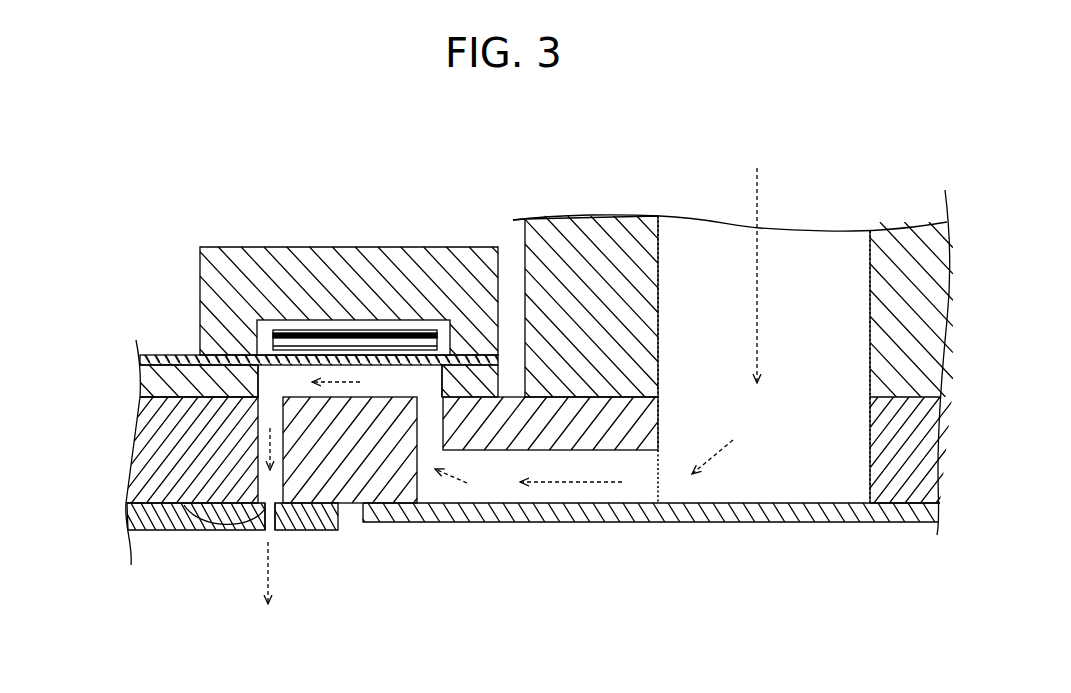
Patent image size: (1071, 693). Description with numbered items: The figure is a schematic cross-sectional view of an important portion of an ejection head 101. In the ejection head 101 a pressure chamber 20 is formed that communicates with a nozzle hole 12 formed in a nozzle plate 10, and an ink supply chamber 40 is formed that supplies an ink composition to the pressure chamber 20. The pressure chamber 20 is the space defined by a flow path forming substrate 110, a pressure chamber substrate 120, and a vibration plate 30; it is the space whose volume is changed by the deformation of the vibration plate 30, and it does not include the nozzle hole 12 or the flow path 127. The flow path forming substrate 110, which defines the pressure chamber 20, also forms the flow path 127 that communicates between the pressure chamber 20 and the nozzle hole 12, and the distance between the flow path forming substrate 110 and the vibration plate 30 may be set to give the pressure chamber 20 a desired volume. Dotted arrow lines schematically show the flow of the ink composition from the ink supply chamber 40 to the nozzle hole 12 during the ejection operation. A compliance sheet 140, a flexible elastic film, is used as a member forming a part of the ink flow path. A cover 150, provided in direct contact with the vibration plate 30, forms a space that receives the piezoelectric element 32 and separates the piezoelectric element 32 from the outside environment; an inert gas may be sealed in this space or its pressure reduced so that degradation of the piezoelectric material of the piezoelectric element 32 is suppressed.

The ejection head 101 is at (879, 150).
The flow path forming substrate 110 is at (583, 240).
The ink supply chamber 40 is at (711, 245).
The piezoelectric element 32 is at (294, 332).
The cover 150 is at (376, 262).
The vibration plate 30 is at (160, 353).
The pressure chamber substrate 120 is at (140, 379).
The pressure chamber 20 is at (133, 413).
The nozzle plate 10 is at (202, 531).
The flow path 127 is at (227, 531).
The nozzle hole 12 is at (270, 547).
The compliance sheet 140 is at (715, 523).